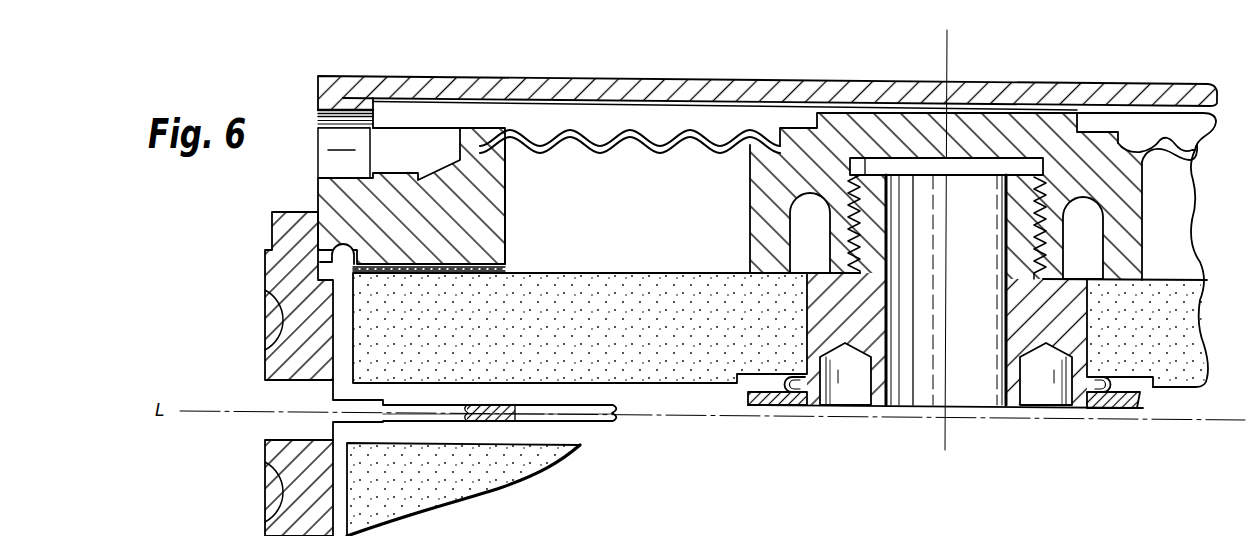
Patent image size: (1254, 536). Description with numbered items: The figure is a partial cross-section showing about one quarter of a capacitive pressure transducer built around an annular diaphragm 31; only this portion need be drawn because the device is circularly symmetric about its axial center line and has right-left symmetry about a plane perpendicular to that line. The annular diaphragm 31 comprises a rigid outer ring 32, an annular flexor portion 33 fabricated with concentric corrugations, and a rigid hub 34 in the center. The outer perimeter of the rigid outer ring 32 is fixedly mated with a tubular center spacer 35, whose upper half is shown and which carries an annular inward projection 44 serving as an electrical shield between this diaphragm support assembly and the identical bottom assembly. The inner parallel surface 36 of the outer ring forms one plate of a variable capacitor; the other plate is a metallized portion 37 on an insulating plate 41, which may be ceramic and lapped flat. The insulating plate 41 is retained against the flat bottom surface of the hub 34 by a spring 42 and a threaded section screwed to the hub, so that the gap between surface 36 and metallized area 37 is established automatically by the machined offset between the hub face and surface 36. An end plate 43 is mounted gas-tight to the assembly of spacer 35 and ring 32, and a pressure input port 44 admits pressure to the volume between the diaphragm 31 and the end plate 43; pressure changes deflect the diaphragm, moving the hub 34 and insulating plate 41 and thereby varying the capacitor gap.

The annular diaphragm 31 is at (657, 128).
The rigid outer ring 32 is at (432, 178).
The annular flexor portion 33 is at (580, 132).
The rigid hub 34 is at (852, 108).
The tubular center spacer 35 is at (265, 281).
The inner parallel surface 36 is at (450, 253).
The metallized portion 37 is at (474, 284).
The insulating plate 41 is at (544, 315).
The spring 42 is at (787, 403).
The end plate 43 is at (476, 80).
The pressure input port 44 is at (319, 117).